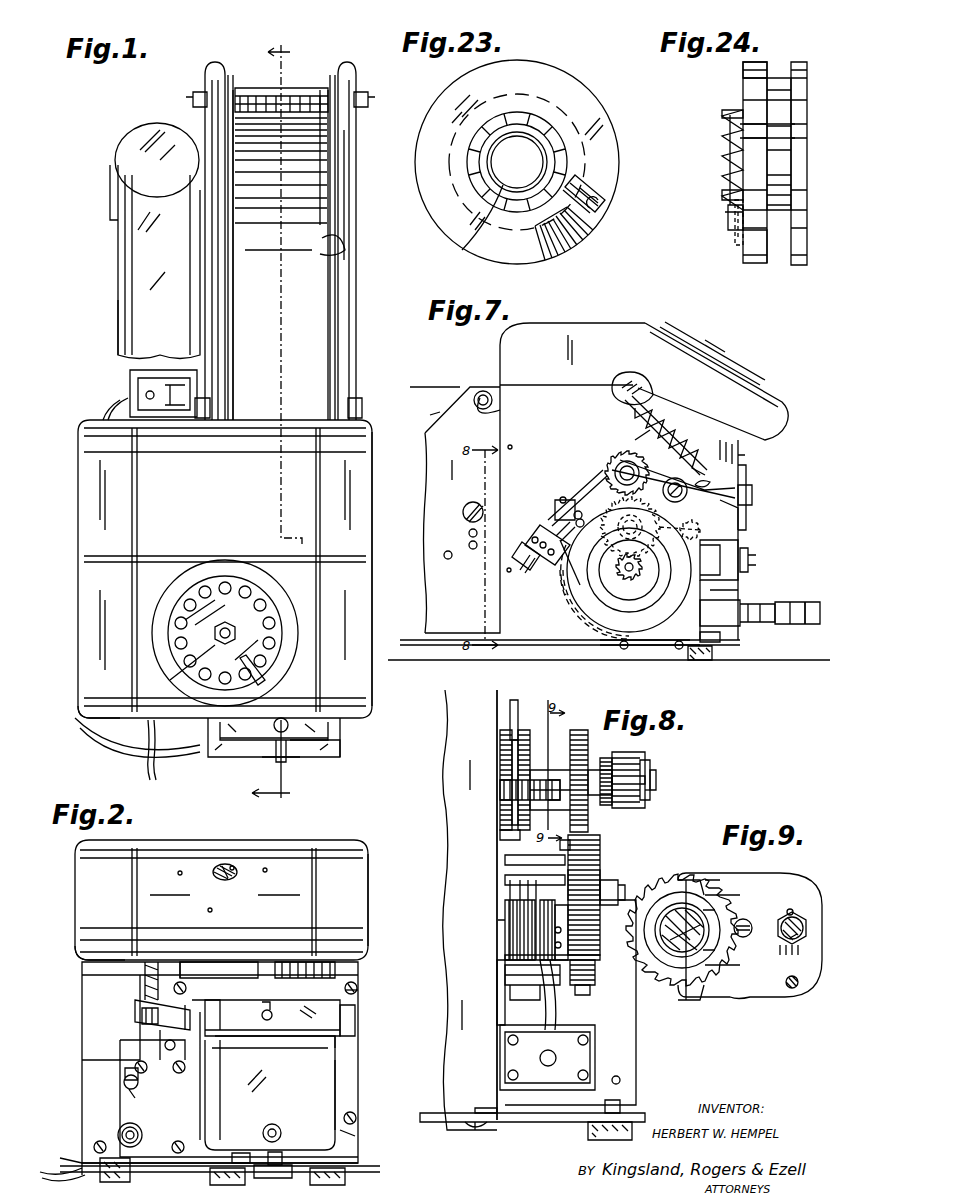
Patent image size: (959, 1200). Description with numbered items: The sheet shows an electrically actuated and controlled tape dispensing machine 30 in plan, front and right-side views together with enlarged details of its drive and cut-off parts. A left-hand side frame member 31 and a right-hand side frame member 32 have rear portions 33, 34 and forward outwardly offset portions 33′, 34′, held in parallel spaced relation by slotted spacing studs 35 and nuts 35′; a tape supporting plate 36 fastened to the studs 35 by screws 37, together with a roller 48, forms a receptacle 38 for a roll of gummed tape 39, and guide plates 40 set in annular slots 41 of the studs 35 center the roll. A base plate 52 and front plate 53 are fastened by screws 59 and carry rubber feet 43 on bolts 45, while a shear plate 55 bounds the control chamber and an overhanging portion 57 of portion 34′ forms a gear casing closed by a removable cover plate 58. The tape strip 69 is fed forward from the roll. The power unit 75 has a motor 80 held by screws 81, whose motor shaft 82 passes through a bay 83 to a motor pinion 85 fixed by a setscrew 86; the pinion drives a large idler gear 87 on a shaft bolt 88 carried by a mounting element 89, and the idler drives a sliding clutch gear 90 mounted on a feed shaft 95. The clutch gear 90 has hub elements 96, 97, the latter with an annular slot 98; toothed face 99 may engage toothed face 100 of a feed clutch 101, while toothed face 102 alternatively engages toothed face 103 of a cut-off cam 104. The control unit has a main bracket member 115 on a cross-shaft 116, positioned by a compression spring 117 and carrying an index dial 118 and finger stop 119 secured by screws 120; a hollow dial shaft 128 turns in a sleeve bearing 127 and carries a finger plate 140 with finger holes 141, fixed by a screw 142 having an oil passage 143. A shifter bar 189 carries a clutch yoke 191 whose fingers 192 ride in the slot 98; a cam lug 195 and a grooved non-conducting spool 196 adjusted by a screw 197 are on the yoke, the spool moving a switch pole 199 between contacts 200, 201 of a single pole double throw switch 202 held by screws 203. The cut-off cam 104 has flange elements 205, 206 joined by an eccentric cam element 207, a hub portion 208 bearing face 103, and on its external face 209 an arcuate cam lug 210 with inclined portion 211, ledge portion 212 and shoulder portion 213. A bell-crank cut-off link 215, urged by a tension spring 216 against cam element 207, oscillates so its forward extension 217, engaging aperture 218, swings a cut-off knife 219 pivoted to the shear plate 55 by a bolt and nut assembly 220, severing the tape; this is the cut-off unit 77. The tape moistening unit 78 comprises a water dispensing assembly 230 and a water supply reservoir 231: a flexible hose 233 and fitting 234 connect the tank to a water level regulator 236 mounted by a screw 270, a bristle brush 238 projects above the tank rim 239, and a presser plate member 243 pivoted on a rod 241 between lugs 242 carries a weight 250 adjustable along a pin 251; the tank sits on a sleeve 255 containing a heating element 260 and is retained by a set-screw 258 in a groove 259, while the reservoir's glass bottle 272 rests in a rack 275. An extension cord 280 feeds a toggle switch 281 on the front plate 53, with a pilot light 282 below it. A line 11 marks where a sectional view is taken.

In FIG. 1, the section line 11 is at (280, 424).
In FIG. 1, the tape dispensing machine 30 is at (364, 322).
In FIG. 2, the tape dispensing machine 30 is at (352, 848).
In FIG. 7, the tape dispensing machine 30 is at (757, 346).
In FIG. 1, the left-hand side frame member 31 is at (383, 458).
In FIG. 2, the left-hand side frame member 31 is at (377, 881).
In FIG. 1, the right-hand side frame member 32 is at (86, 411).
In FIG. 2, the right-hand side frame member 32 is at (113, 835).
In FIG. 7, the right-hand side frame member 32 is at (508, 326).
In FIG. 8, the right-hand side frame member 32 is at (474, 916).
In FIG. 1, the rear portion 33 is at (345, 292).
In FIG. 1, the forward outwardly offset portion 33′ is at (352, 503).
In FIG. 2, the forward outwardly offset portion 33′ is at (352, 868).
In FIG. 1, the rear portion 34 is at (210, 266).
In FIG. 7, the rear portion 34 is at (440, 535).
In FIG. 1, the forward outwardly offset portion 34′ is at (105, 510).
In FIG. 2, the forward outwardly offset portion 34′ is at (100, 902).
In FIG. 7, the forward outwardly offset portion 34′ is at (570, 332).
In FIG. 8, the forward outwardly offset portion 34′ is at (445, 792).
In FIG. 1, the spacing studs 35 is at (300, 88).
In FIG. 7, the spacing studs 35 is at (476, 396).
In FIG. 1, the nuts 35′ is at (195, 92).
In FIG. 7, the nuts 35′ is at (485, 390).
In FIG. 1, the tape supporting plate 36 is at (266, 90).
In FIG. 1, the screws 37 is at (232, 88).
In FIG. 1, the receptacle 38 is at (345, 255).
In FIG. 1, the roll of gummed tape 39 is at (330, 205).
In FIG. 1, the guide plates 40 is at (205, 120).
In FIG. 7, the guide plates 40 is at (452, 410).
In FIG. 1, the annular slots 41 is at (256, 112).
In FIG. 2, the foot 43 is at (334, 1168).
In FIG. 7, the foot 43 is at (715, 656).
In FIG. 8, the foot 43 is at (588, 1134).
In FIG. 7, the bolts 45 is at (722, 637).
In FIG. 8, the bolts 45 is at (622, 1103).
In FIG. 7, the roller 48 is at (444, 556).
In FIG. 2, the base plate 52 is at (345, 1170).
In FIG. 7, the base plate 52 is at (640, 660).
In FIG. 8, the base plate 52 is at (535, 1125).
In FIG. 2, the front plate 53 is at (362, 1140).
In FIG. 7, the front plate 53 is at (735, 592).
In FIG. 8, the front plate 53 is at (625, 1065).
In FIG. 2, the shear plate 55 is at (352, 1010).
In FIG. 7, the shear plate 55 is at (745, 458).
In FIG. 1, the overhanging outwardly extending portion 57 is at (92, 716).
In FIG. 2, the overhanging outwardly extending portion 57 is at (92, 944).
In FIG. 7, the overhanging outwardly extending portion 57 is at (745, 440).
In FIG. 2, the removable cover plate 58 is at (115, 1042).
In FIG. 2, the screws 59 is at (180, 1140).
In FIG. 8, the screws 59 is at (468, 1132).
In FIG. 1, the strip of tape 69 is at (302, 430).
In FIG. 7, the strip of tape 69 is at (442, 388).
In FIG. 7, the power unit 75 is at (598, 452).
In FIG. 8, the power unit 75 is at (604, 840).
In FIG. 2, the cut-off unit 77 is at (123, 1024).
In FIG. 7, the cut-off unit 77 is at (756, 512).
In FIG. 1, the tape moistening unit 78 is at (347, 743).
In FIG. 2, the tape moistening unit 78 is at (347, 1077).
In FIG. 7, the motor 80 is at (600, 628).
In FIG. 8, the motor 80 is at (498, 1010).
In FIG. 2, the screws 81 is at (284, 1160).
In FIG. 7, the screws 81 is at (600, 646).
In FIG. 7, the motor shaft 82 is at (645, 595).
In FIG. 8, the motor shaft 82 is at (530, 990).
In FIG. 7, the bay 83 is at (580, 600).
In FIG. 7, the motor pinion 85 is at (648, 580).
In FIG. 8, the motor pinion 85 is at (592, 996).
In FIG. 8, the setscrew 86 is at (597, 985).
In FIG. 7, the idler gear 87 is at (690, 532).
In FIG. 8, the idler gear 87 is at (600, 875).
In FIG. 7, the shaft bolt 88 is at (578, 510).
In FIG. 8, the shaft bolt 88 is at (618, 896).
In FIG. 8, the mounting element 89 is at (588, 850).
In FIG. 7, the sliding clutch gear 90 is at (622, 455).
In FIG. 8, the sliding clutch gear 90 is at (580, 730).
In FIG. 9, the sliding clutch gear 90 is at (684, 892).
In FIG. 7, the feed shaft 95 is at (617, 470).
In FIG. 8, the feed shaft 95 is at (656, 781).
In FIG. 9, the feed shaft 95 is at (748, 940).
In FIG. 8, the hub element 96 is at (605, 805).
In FIG. 9, the hub element 97 is at (745, 922).
In FIG. 9, the peripheral annular slot 98 is at (705, 965).
In FIG. 8, the toothed face 99 is at (640, 760).
In FIG. 8, the toothed face 100 is at (650, 795).
In FIG. 7, the feed clutch 101 is at (700, 440).
In FIG. 8, the feed clutch 101 is at (656, 776).
In FIG. 8, the toothed face 102 is at (562, 730).
In FIG. 23, the toothed face 103 is at (465, 238).
In FIG. 24, the toothed face 103 is at (728, 145).
In FIG. 23, the cut-off cam 104 is at (606, 90).
In FIG. 24, the cut-off cam 104 is at (769, 283).
In FIG. 2, the main bracket member 115 is at (245, 962).
In FIG. 2, the cross-shaft 116 is at (200, 975).
In FIG. 2, the compression spring 117 is at (340, 970).
In FIG. 1, the index dial 118 is at (196, 570).
In FIG. 1, the finger stop 119 is at (268, 684).
In FIG. 2, the screws 120 is at (177, 873).
In FIG. 2, the sleeve bearing 127 is at (234, 864).
In FIG. 2, the hollow dial shaft 128 is at (218, 866).
In FIG. 1, the dialing disc 140 is at (226, 576).
In FIG. 1, the finger holes 141 is at (184, 600).
In FIG. 1, the screw 142 is at (185, 670).
In FIG. 2, the screw 142 is at (225, 864).
In FIG. 1, the longitudinal passage 143 is at (238, 627).
In FIG. 8, the shifter bar 189 is at (500, 797).
In FIG. 9, the shifter bar 189 is at (794, 915).
In FIG. 8, the clutch yoke 191 is at (600, 775).
In FIG. 9, the clutch yoke 191 is at (738, 906).
In FIG. 9, the fingers 192 is at (702, 860).
In FIG. 9, the cam lug 195 is at (745, 950).
In FIG. 8, the grooved disc 196 is at (500, 834).
In FIG. 9, the screw 197 is at (794, 992).
In FIG. 7, the switch pole 199 is at (578, 500).
In FIG. 8, the switch pole 199 is at (505, 858).
In FIG. 7, the switch contact 200 is at (562, 500).
In FIG. 8, the switch contact 200 is at (505, 878).
In FIG. 8, the switch contact 201 is at (505, 888).
In FIG. 7, the single pole double throw switch 202 is at (552, 562).
In FIG. 8, the single pole double throw switch 202 is at (520, 913).
In FIG. 7, the screws 203 is at (545, 525).
In FIG. 8, the screws 203 is at (500, 922).
In FIG. 8, the circular flange element 205 is at (500, 748).
In FIG. 24, the circular flange element 205 is at (758, 62).
In FIG. 8, the circular flange element 206 is at (510, 766).
In FIG. 24, the circular flange element 206 is at (800, 266).
In FIG. 8, the cam element 207 is at (518, 778).
In FIG. 23, the cam element 207 is at (540, 78).
In FIG. 24, the cam element 207 is at (778, 78).
In FIG. 24, the hub portion 208 is at (736, 112).
In FIG. 23, the external face 209 is at (605, 145).
In FIG. 24, the external face 209 is at (743, 68).
In FIG. 23, the cam lug 210 is at (595, 192).
In FIG. 24, the cam lug 210 is at (740, 246).
In FIG. 23, the inclined portion 211 is at (575, 252).
In FIG. 24, the inclined portion 211 is at (740, 252).
In FIG. 23, the ledge portion 212 is at (600, 215).
In FIG. 24, the ledge portion 212 is at (736, 226).
In FIG. 23, the shoulder portion 213 is at (605, 202).
In FIG. 24, the shoulder portion 213 is at (728, 206).
In FIG. 7, the cut-off link 215 is at (632, 448).
In FIG. 8, the cut-off link 215 is at (520, 740).
In FIG. 2, the tension spring 216 is at (152, 960).
In FIG. 7, the tension spring 216 is at (676, 433).
In FIG. 2, the forward extension 217 is at (142, 1014).
In FIG. 7, the forward extension 217 is at (756, 492).
In FIG. 2, the aperture 218 is at (138, 1002).
In FIG. 2, the cut-off knife 219 is at (150, 1034).
In FIG. 7, the cut-off knife 219 is at (752, 472).
In FIG. 2, the bolt and nut assembly 220 is at (180, 1076).
In FIG. 2, the water dispensing assembly 230 is at (357, 1136).
In FIG. 1, the water supply reservoir 231 is at (113, 308).
In FIG. 1, the flexible hose 233 is at (118, 400).
In FIG. 2, the fitting 234 is at (245, 1147).
In FIG. 1, the water level regulator 236 is at (138, 376).
In FIG. 2, the bristle brush 238 is at (258, 1046).
In FIG. 2, the upper rim 239 is at (340, 1040).
In FIG. 2, the rod 241 is at (354, 1024).
In FIG. 2, the upstanding lugs 242 is at (218, 1002).
In FIG. 1, the plate member 243 is at (292, 762).
In FIG. 1, the weight 250 is at (312, 754).
In FIG. 2, the weight 250 is at (325, 995).
In FIG. 1, the pin 251 is at (275, 752).
In FIG. 2, the pin 251 is at (272, 1012).
In FIG. 7, the metal sleeve 255 is at (815, 626).
In FIG. 2, the set-screw 258 is at (268, 1168).
In FIG. 7, the groove 259 is at (810, 606).
In FIG. 2, the electrical heating element 260 is at (282, 1128).
In FIG. 1, the screw 270 is at (178, 388).
In FIG. 7, the screw 270 is at (462, 512).
In FIG. 1, the glass bottle 272 is at (150, 148).
In FIG. 1, the rack 275 is at (118, 220).
In FIG. 1, the electrical extension cord 280 is at (147, 752).
In FIG. 2, the electrical extension cord 280 is at (62, 1172).
In FIG. 2, the toggle switch 281 is at (122, 1080).
In FIG. 7, the toggle switch 281 is at (750, 560).
In FIG. 2, the pilot light 282 is at (118, 1132).
In FIG. 7, the pilot light 282 is at (768, 600).